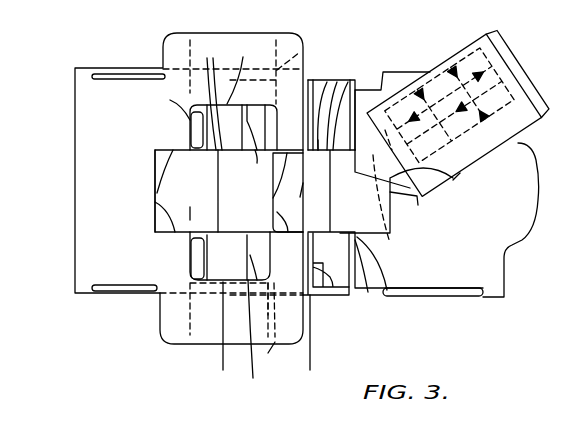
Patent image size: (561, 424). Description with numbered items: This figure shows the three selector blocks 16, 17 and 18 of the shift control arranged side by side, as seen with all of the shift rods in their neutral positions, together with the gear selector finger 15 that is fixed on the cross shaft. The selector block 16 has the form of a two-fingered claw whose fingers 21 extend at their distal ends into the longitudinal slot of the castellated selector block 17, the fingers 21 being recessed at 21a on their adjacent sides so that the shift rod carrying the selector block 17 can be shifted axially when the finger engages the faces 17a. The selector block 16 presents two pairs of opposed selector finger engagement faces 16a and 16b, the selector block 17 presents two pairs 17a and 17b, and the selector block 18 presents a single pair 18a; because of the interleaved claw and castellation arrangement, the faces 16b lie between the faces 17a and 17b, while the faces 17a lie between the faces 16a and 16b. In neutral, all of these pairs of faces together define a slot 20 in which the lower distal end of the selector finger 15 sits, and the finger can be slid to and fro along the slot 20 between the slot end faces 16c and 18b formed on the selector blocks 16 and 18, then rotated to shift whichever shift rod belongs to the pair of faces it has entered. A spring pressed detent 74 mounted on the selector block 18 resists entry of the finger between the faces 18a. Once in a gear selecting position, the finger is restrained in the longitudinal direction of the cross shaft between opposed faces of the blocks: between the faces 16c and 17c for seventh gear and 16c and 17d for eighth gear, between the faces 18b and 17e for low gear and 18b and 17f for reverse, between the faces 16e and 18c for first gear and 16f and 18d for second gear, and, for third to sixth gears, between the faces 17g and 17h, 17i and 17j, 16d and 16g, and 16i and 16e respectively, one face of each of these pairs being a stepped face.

The gear selector finger 15 is at (300, 194).
The selector block 16 is at (80, 100).
The selector finger engagement faces 16a is at (155, 203).
The selector finger engagement faces 16b is at (277, 212).
The slot end face 16c is at (155, 159).
The face 16d is at (161, 104).
The face 16e is at (195, 258).
The face 16f is at (311, 346).
The face 16g is at (287, 155).
The face 16i is at (258, 344).
The selector block 17 is at (317, 295).
The selector finger engagement faces 17a is at (231, 94).
The selector finger engagement faces 17b is at (350, 82).
The face 17c is at (191, 132).
The face 17d is at (197, 248).
The face 17e is at (398, 62).
The face 17f is at (368, 292).
The face 17g is at (327, 80).
The face 17h is at (322, 80).
The face 17i is at (275, 329).
The face 17j is at (333, 290).
The selector block 18 is at (483, 297).
The selector finger engagement faces 18a is at (390, 243).
The slot end face 18b is at (417, 196).
The face 18c is at (421, 72).
The face 18d is at (387, 290).
The slot 20 is at (190, 230).
The fingers 21 is at (167, 50).
The recess 21a is at (232, 219).
The spring pressed detent 74 is at (460, 173).